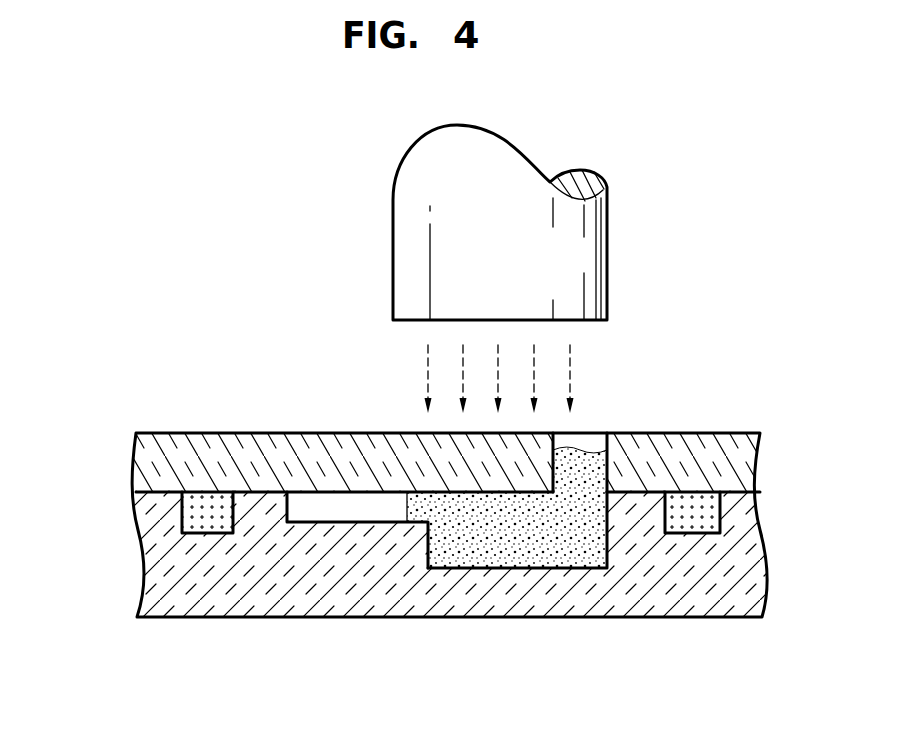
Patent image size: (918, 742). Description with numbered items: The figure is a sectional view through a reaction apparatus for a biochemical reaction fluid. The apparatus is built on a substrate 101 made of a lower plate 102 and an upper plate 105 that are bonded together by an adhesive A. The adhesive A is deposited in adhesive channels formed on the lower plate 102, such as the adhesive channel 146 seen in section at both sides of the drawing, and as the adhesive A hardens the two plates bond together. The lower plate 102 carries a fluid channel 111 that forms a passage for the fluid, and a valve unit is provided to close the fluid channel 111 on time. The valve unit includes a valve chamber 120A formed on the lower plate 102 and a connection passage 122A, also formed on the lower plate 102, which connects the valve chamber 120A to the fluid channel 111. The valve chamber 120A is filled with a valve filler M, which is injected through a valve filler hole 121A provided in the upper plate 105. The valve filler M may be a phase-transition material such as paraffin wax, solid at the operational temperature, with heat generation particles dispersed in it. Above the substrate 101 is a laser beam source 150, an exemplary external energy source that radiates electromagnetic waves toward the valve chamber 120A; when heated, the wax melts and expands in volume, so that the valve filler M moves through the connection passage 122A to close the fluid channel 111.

The laser beam source 150 is at (590, 263).
The valve filler hole 121A is at (604, 424).
The fluid channel 111 is at (305, 486).
The upper plate 105 is at (145, 466).
The substrate 101 is at (390, 525).
The lower plate 102 is at (421, 554).
The adhesive channel 146 is at (191, 546).
The adhesive A is at (217, 527).
The connection passage 122A is at (392, 534).
The valve filler M is at (543, 545).
The valve chamber 120A is at (569, 580).